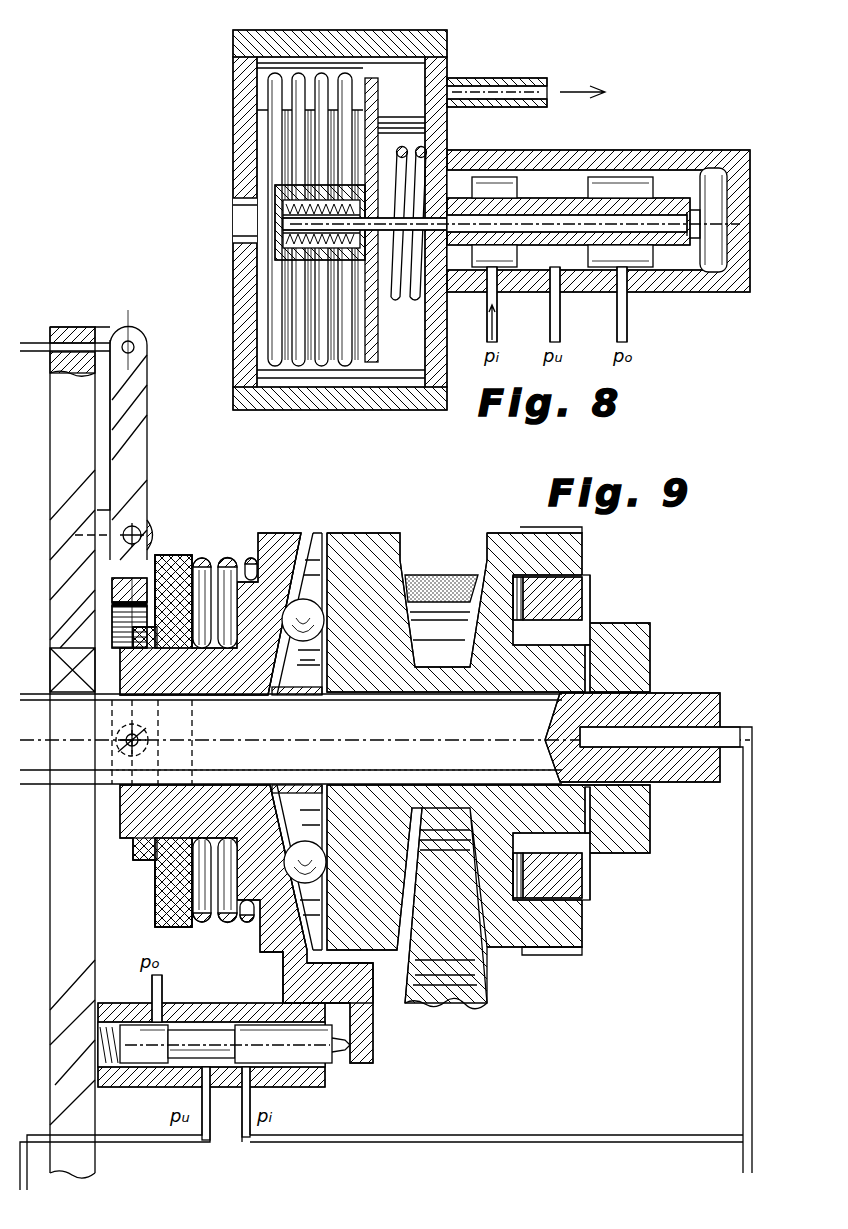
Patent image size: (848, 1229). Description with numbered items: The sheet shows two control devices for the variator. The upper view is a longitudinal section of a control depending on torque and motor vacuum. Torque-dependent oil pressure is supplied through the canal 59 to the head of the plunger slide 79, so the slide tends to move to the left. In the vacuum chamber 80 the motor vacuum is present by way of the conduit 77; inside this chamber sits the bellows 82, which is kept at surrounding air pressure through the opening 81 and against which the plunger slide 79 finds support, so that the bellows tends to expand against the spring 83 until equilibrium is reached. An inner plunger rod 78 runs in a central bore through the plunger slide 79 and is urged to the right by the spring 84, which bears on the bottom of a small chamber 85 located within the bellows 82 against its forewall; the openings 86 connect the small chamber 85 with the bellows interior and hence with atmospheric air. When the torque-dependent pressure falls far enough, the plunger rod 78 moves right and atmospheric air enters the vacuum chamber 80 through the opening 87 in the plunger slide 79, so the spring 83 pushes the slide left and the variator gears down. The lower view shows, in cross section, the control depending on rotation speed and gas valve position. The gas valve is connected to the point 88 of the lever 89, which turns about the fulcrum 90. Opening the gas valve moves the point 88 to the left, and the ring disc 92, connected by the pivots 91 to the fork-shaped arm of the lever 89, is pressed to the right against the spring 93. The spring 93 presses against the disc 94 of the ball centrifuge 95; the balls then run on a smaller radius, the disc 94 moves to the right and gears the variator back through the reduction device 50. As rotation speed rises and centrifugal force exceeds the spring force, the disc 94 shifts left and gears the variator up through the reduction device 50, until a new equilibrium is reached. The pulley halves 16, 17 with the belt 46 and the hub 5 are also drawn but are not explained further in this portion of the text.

In FIG. 9, the hub 5 is at (680, 693).
In FIG. 9, the pulley half 16 is at (490, 533).
In FIG. 9, the pulley half 17 is at (400, 535).
In FIG. 9, the belt 46 is at (428, 573).
In FIG. 9, the reduction device 50 is at (309, 1092).
In FIG. 8, the canal 59 is at (629, 158).
In FIG. 8, the conduit 77 is at (500, 80).
In FIG. 8, the plunger rod 78 is at (533, 182).
In FIG. 8, the plunger slide 79 is at (690, 185).
In FIG. 8, the vacuum chamber 80 is at (397, 68).
In FIG. 8, the opening 81 is at (242, 213).
In FIG. 8, the bellows 82 is at (333, 72).
In FIG. 8, the spring 83 is at (407, 147).
In FIG. 8, the spring 84 is at (272, 258).
In FIG. 8, the small chamber 85 is at (290, 265).
In FIG. 8, the openings 86 is at (283, 190).
In FIG. 8, the opening 87 is at (462, 183).
In FIG. 9, the point 88 is at (127, 335).
In FIG. 9, the lever 89 is at (140, 433).
In FIG. 9, the fulcrum 90 is at (153, 523).
In FIG. 9, the pivots 91 is at (110, 757).
In FIG. 9, the ring disc 92 is at (170, 893).
In FIG. 9, the spring 93 is at (217, 928).
In FIG. 9, the disc 94 is at (267, 955).
In FIG. 9, the ball centrifuge 95 is at (329, 521).